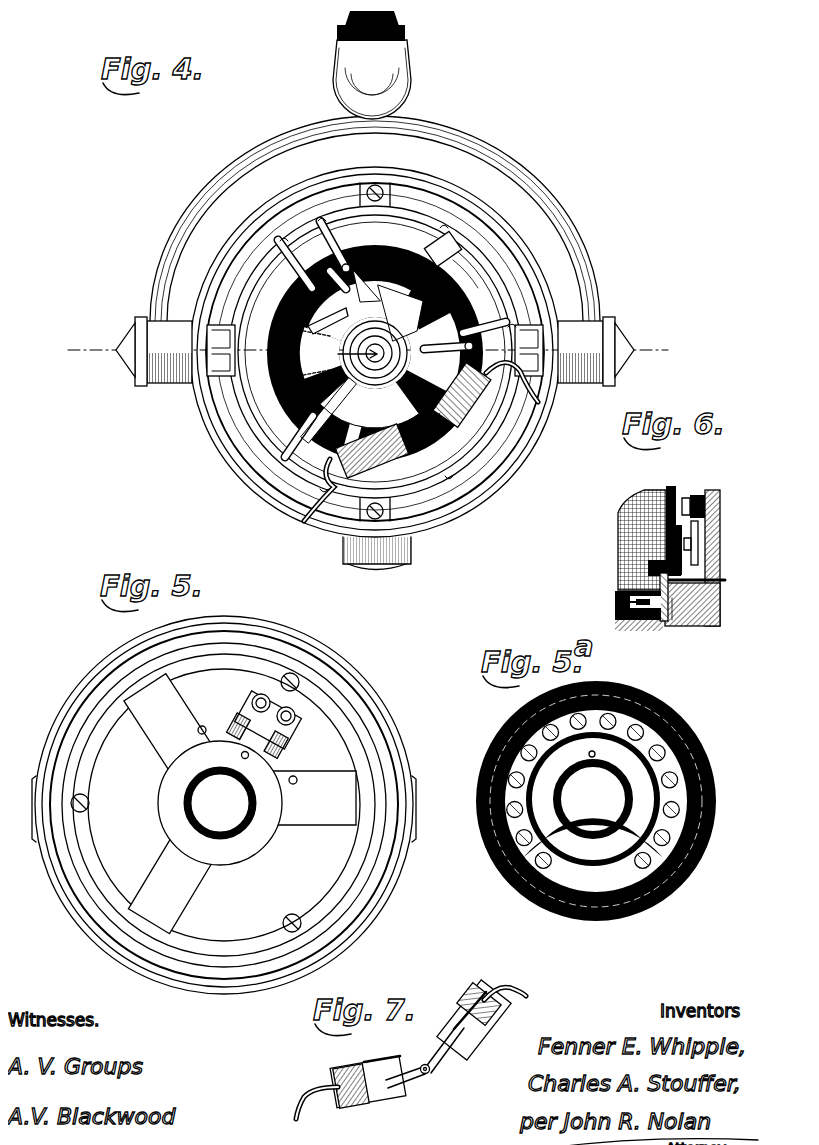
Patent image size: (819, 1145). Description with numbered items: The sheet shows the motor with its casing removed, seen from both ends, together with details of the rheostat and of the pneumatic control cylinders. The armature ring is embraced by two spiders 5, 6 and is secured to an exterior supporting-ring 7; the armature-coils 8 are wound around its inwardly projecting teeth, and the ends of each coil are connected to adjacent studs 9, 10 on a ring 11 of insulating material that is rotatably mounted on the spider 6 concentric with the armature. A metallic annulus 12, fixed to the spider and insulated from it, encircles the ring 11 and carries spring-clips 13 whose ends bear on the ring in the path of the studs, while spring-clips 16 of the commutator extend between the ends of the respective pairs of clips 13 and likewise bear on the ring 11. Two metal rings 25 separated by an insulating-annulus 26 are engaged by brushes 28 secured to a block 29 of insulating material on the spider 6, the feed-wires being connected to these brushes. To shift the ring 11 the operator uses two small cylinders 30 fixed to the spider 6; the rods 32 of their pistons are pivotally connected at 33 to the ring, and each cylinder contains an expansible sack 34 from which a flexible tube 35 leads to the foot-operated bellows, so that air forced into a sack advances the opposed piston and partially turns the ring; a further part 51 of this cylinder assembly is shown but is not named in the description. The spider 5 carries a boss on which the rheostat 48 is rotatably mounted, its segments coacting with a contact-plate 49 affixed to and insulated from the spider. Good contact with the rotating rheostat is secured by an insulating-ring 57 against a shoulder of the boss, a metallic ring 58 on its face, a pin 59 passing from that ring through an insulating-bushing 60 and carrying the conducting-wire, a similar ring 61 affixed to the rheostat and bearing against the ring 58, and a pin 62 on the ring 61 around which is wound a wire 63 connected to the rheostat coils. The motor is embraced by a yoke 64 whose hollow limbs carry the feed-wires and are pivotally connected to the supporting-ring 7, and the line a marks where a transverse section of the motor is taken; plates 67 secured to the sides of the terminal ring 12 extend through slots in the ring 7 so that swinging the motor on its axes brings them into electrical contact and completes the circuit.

In FIG. 4, the section line a is at (360, 350).
In FIG. 5, the spider 5 is at (240, 804).
In FIG. 6, the spider 5 is at (712, 502).
In FIG. 4, the spider 6 is at (391, 329).
In FIG. 4, the supporting-ring 7 is at (500, 472).
In FIG. 5, the supporting-ring 7 is at (330, 665).
In FIG. 5, the armature-coils 8 is at (186, 802).
In FIG. 4, the stud 9 is at (340, 234).
In FIG. 4, the stud 10 is at (312, 263).
In FIG. 4, the ring 11 is at (469, 276).
In FIG. 4, the metallic annulus 12 is at (402, 236).
In FIG. 4, the spring-clips 13 is at (293, 263).
In FIG. 4, the spring-clips 16 is at (422, 341).
In FIG. 4, the metal rings 25 is at (336, 355).
In FIG. 4, the insulating-annulus 26 is at (398, 308).
In FIG. 4, the brushes 28 is at (362, 293).
In FIG. 4, the block 29 is at (314, 353).
In FIG. 4, the cylinders 30 is at (371, 451).
In FIG. 7, the cylinders 30 is at (362, 1100).
In FIG. 4, the piston rods 32 is at (445, 417).
In FIG. 7, the piston rods 32 is at (402, 1080).
In FIG. 4, the pivotal connection 33 is at (402, 430).
In FIG. 7, the pivotal connection 33 is at (420, 1071).
In FIG. 7, the expansible sack 34 is at (338, 1068).
In FIG. 4, the flexible tube 35 is at (296, 513).
In FIG. 7, the flexible tube 35 is at (295, 1092).
In FIG. 4, the rheostat 48 is at (276, 378).
In FIG. 5A, the rheostat 48 is at (699, 742).
In FIG. 6, the rheostat 48 is at (664, 480).
In FIG. 5, the contact-plate 49 is at (249, 737).
In FIG. 6, the contact-plate 49 is at (690, 529).
In FIG. 7, the connecting bar 51 is at (372, 1057).
In FIG. 6, the insulating-ring 57 is at (664, 613).
In FIG. 5, the metallic ring 58 is at (262, 794).
In FIG. 6, the metallic ring 58 is at (657, 615).
In FIG. 5, the pin 59 is at (233, 747).
In FIG. 6, the pin 59 is at (727, 550).
In FIG. 6, the insulating-bushing 60 is at (712, 580).
In FIG. 5A, the ring 61 is at (593, 798).
In FIG. 6, the ring 61 is at (650, 612).
In FIG. 5A, the pin 62 is at (591, 748).
In FIG. 6, the pin 62 is at (612, 595).
In FIG. 6, the wire 63 is at (618, 582).
In FIG. 4, the yoke 64 is at (172, 207).
In FIG. 4, the plates 67 is at (210, 334).